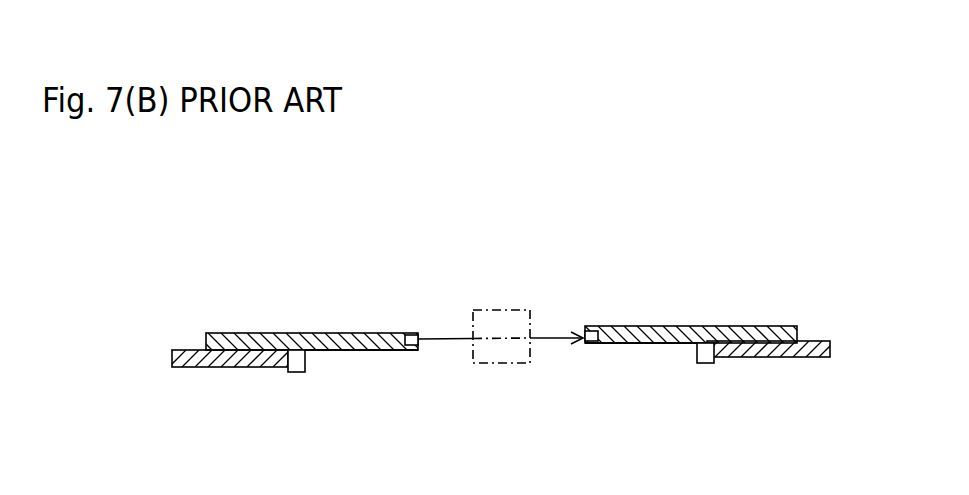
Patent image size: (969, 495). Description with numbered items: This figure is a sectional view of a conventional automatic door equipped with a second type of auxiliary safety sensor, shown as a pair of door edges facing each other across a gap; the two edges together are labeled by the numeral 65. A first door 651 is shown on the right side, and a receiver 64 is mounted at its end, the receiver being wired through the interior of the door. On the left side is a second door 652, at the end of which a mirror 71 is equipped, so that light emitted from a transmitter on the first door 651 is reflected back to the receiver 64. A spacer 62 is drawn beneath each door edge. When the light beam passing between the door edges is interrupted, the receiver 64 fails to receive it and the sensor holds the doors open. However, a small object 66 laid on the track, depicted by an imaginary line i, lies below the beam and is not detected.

The light shielding plate assembly 65 is at (540, 197).
The second door 652 is at (345, 333).
The first door 651 is at (647, 325).
The mirror 71 is at (380, 350).
The receiver 64 is at (618, 343).
The spacer 62 is at (293, 372).
The small object 66 is at (518, 353).
The imaginary line i is at (483, 365).